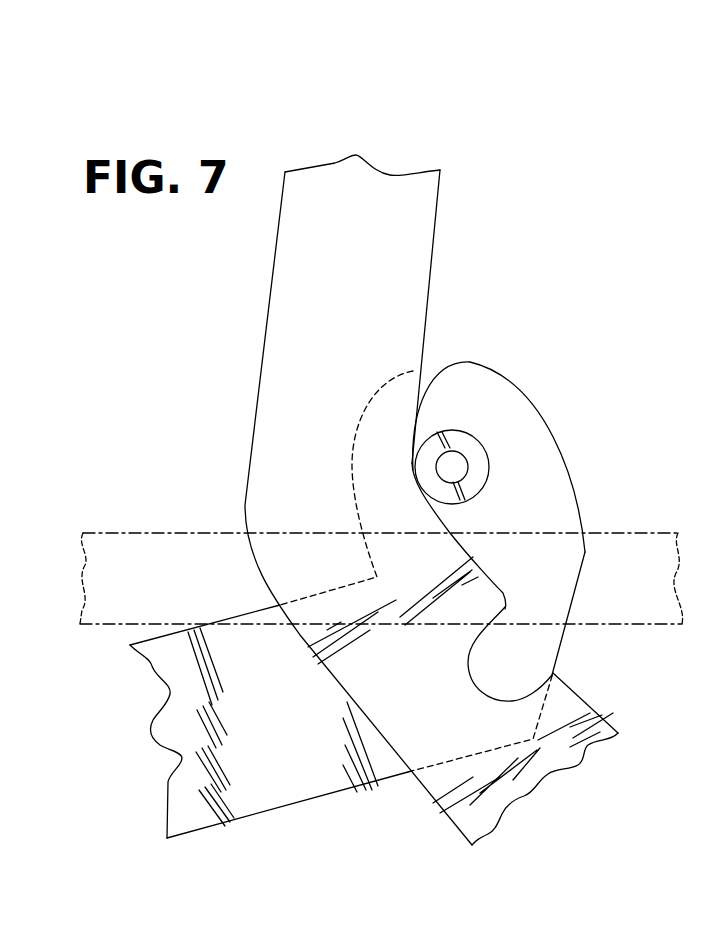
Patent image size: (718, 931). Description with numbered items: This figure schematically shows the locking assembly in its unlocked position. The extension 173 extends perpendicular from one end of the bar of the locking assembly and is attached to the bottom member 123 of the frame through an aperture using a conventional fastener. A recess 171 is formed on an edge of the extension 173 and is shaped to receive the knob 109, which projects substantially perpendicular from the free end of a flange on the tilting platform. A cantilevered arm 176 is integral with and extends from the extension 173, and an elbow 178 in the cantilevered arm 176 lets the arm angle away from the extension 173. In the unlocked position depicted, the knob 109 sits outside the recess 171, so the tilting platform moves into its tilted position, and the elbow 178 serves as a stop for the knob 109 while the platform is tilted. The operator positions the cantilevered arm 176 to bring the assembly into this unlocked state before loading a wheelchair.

The cantilevered arm 176 is at (420, 257).
The elbow 178 is at (413, 473).
The knob 109 is at (480, 455).
The bottom member 123 is at (632, 550).
The extension 173 is at (580, 708).
The recess 171 is at (478, 692).